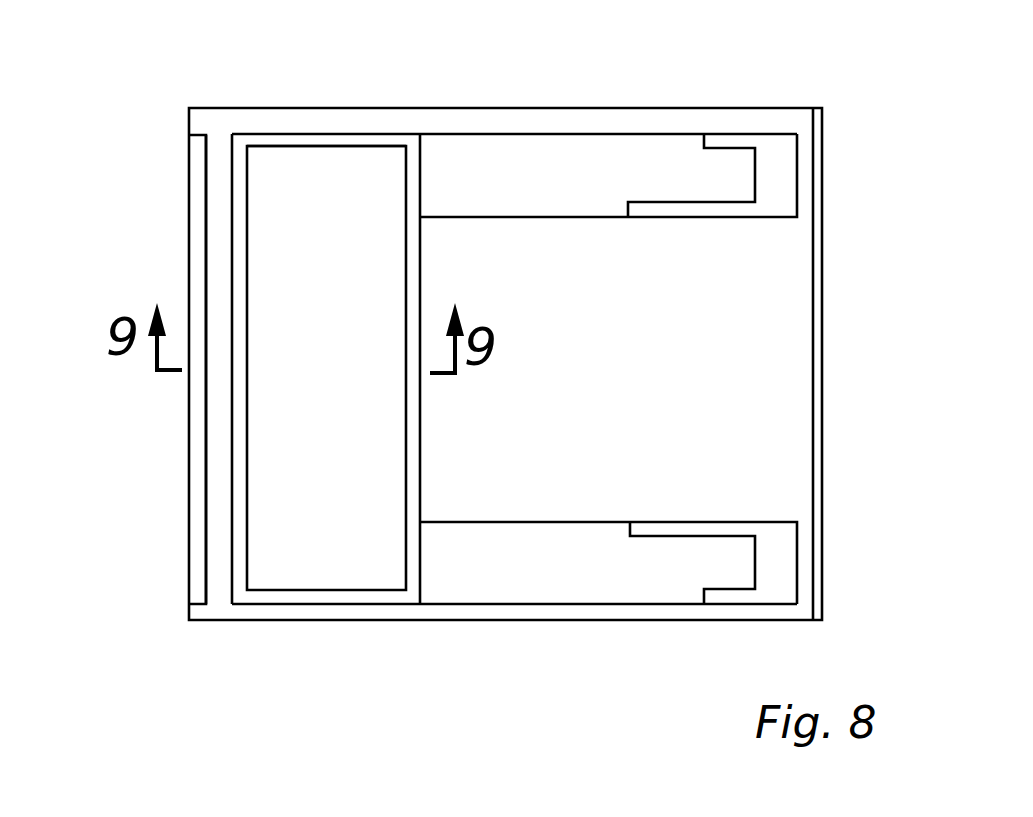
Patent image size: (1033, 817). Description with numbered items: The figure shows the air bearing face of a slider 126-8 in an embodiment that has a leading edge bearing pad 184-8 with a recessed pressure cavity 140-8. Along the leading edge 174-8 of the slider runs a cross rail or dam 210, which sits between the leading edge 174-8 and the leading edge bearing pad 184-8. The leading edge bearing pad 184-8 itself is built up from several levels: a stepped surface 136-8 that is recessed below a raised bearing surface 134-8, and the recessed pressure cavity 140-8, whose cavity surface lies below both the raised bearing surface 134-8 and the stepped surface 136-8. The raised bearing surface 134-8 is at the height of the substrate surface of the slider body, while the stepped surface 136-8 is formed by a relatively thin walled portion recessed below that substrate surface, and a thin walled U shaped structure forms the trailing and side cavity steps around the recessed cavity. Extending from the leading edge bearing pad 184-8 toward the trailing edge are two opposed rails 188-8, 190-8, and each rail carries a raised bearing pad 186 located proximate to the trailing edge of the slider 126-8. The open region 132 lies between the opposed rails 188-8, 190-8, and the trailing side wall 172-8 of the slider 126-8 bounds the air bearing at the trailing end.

The slider 126-8 is at (848, 178).
The right side wall 172-8 is at (816, 382).
The leading edge 174-8 is at (188, 506).
The cross rail or dam 210 is at (196, 429).
The stepped surface 136-8 is at (238, 589).
The raised bearing surface 134-8 is at (418, 404).
The recessed pressure cavity 140-8 is at (325, 560).
The leading edge bearing pad 184-8 is at (345, 165).
The rail 188-8 is at (474, 156).
The rail 190-8 is at (552, 574).
The raised bearing pads 186 is at (732, 144).
The central cavity 132 is at (698, 397).